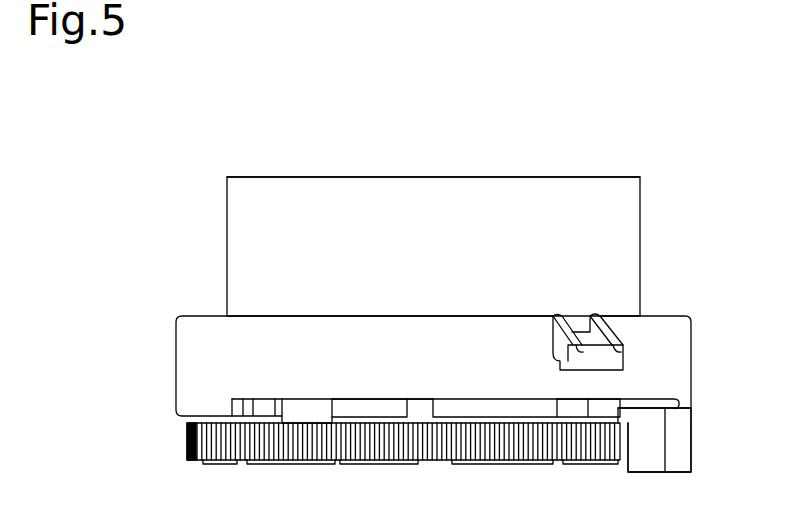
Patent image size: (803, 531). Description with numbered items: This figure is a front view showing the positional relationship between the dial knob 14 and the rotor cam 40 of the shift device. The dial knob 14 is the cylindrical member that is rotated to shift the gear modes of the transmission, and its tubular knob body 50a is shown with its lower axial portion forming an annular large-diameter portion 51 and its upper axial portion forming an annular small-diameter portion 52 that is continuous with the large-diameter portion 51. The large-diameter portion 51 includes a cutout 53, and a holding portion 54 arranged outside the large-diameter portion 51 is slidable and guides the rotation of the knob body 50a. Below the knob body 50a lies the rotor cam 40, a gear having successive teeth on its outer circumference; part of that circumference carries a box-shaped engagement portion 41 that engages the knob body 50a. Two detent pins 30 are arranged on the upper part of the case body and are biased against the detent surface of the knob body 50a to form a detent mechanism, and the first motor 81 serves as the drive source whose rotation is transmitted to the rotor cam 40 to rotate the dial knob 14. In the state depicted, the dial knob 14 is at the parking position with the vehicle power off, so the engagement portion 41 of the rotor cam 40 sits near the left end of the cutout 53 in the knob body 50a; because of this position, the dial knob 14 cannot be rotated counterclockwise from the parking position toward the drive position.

The dial knob 14 is at (661, 137).
The detent pins 30 is at (332, 404).
The rotor cam 40 is at (187, 441).
The engagement portion 41 is at (692, 449).
The knob body 50a is at (455, 177).
The large-diameter portion 51 is at (692, 352).
The small-diameter portion 52 is at (641, 241).
The cutout 53 is at (676, 409).
The holding portion 54 is at (624, 360).
The first motor 81 is at (430, 408).